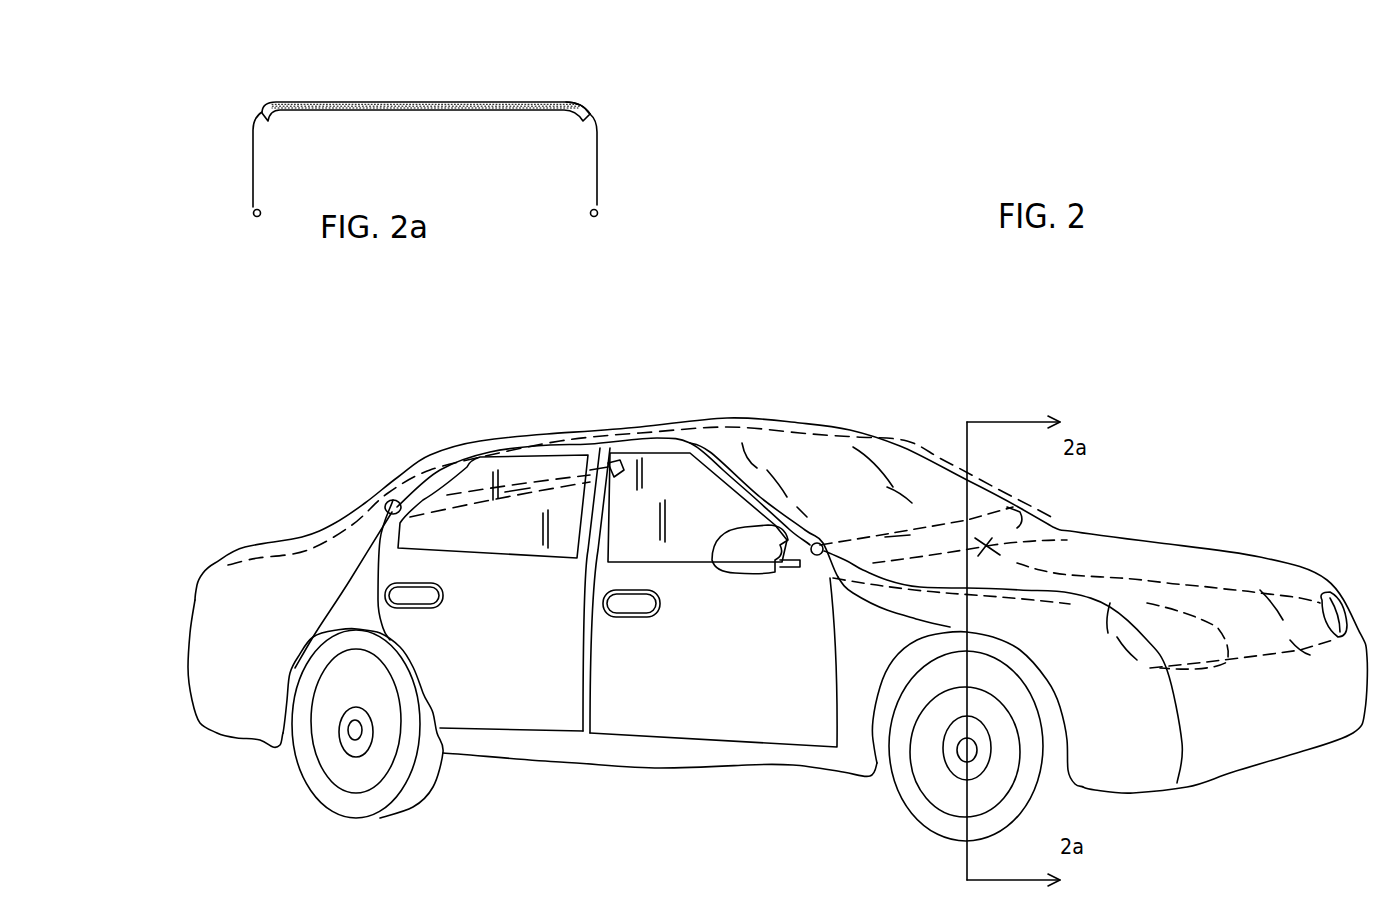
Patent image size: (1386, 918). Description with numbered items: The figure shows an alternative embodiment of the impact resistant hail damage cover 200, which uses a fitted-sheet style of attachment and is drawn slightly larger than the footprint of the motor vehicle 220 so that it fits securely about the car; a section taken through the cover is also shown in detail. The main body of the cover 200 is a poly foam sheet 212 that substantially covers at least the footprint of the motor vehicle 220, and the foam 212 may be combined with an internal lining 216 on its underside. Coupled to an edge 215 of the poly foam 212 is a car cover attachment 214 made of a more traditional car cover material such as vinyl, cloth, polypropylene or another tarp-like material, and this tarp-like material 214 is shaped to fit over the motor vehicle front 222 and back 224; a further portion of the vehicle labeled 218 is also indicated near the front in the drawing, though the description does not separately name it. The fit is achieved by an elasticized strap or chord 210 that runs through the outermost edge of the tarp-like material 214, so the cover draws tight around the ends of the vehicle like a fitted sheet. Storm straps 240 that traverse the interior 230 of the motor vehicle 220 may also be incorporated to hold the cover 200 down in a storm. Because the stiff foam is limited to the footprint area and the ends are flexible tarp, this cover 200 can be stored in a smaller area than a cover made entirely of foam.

In FIG. 2A, the impact resistant hail damage cover 200 is at (504, 125).
In FIG. 2, the impact resistant hail damage cover 200 is at (980, 378).
In FIG. 2A, the elasticized strap or chord 210 is at (598, 214).
In FIG. 2, the elasticized strap or chord 210 is at (435, 465).
In FIG. 2A, the poly foam sheet 212 is at (433, 104).
In FIG. 2A, the car cover attachment / tarp like material 214 is at (600, 132).
In FIG. 2A, the edge of the poly foam 215 is at (593, 117).
In FIG. 2A, the internal lining 216 is at (369, 108).
In FIG. 2, the front fender 218 is at (1133, 573).
In FIG. 2, the motor vehicle 220 is at (515, 607).
In FIG. 2, the motor vehicle front 222 is at (1250, 530).
In FIG. 2, the motor vehicle back 224 is at (312, 465).
In FIG. 2, the interior of the motor vehicle 230 is at (723, 524).
In FIG. 2, the storm straps 240 is at (517, 492).